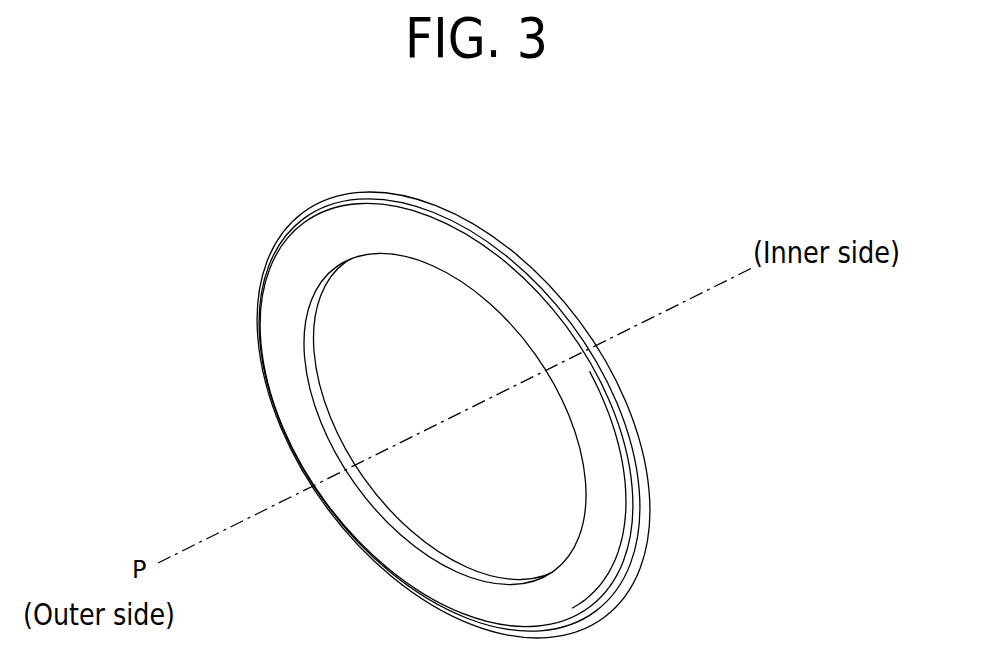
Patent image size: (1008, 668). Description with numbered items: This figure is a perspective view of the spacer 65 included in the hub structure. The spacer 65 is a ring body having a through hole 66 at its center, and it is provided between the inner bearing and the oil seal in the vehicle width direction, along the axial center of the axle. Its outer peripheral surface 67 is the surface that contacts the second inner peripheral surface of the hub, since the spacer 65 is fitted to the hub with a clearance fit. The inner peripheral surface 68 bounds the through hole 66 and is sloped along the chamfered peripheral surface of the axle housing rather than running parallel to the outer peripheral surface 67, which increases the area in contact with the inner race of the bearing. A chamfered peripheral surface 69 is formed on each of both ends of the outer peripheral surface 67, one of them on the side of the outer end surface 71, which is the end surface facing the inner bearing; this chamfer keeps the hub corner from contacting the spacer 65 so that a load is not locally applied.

The spacer 65 is at (453, 386).
The through hole 66 is at (441, 409).
The outer peripheral surface 67 is at (461, 222).
The inner peripheral surface 68 is at (454, 414).
The chamfered peripheral surface 69 is at (322, 212).
The outer end surface 71 is at (407, 560).